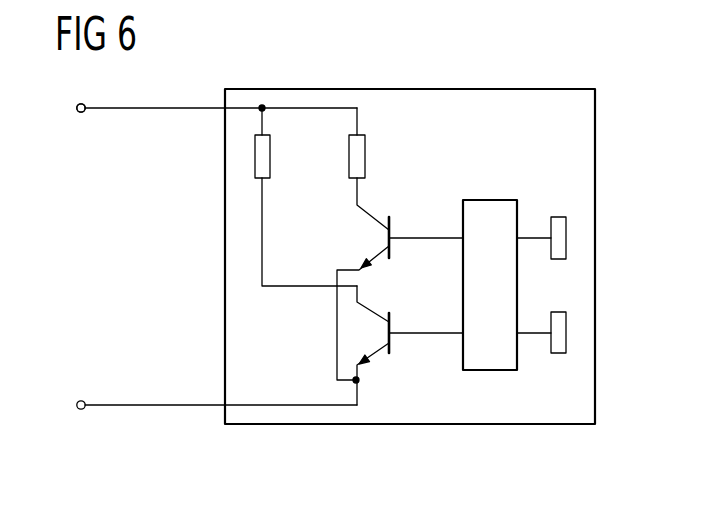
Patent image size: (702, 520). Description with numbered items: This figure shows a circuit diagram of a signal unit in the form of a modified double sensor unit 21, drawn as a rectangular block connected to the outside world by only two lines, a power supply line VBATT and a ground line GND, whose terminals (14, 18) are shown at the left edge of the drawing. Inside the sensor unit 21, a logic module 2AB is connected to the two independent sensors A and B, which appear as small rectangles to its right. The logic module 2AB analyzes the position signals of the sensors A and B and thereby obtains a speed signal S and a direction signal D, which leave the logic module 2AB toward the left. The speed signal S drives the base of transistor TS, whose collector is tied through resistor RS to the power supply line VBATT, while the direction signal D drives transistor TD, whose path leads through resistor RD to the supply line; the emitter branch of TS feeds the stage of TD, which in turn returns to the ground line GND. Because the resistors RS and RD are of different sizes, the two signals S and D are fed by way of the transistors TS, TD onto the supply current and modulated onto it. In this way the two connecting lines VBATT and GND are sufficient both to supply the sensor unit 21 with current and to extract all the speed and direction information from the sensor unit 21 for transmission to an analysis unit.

The modified double sensor unit 21 is at (412, 425).
The supply terminal 14 is at (82, 113).
The supply terminal 18 is at (81, 108).
The power supply line VBATT is at (194, 93).
The ground line GND is at (217, 390).
The resistor RD is at (271, 157).
The resistor RS is at (365, 157).
The transistor TS is at (392, 248).
The transistor TD is at (392, 345).
The speed signal S is at (426, 222).
The direction signal D is at (426, 317).
The logic module 2AB is at (488, 200).
The sensor A is at (558, 217).
The sensor B is at (558, 353).